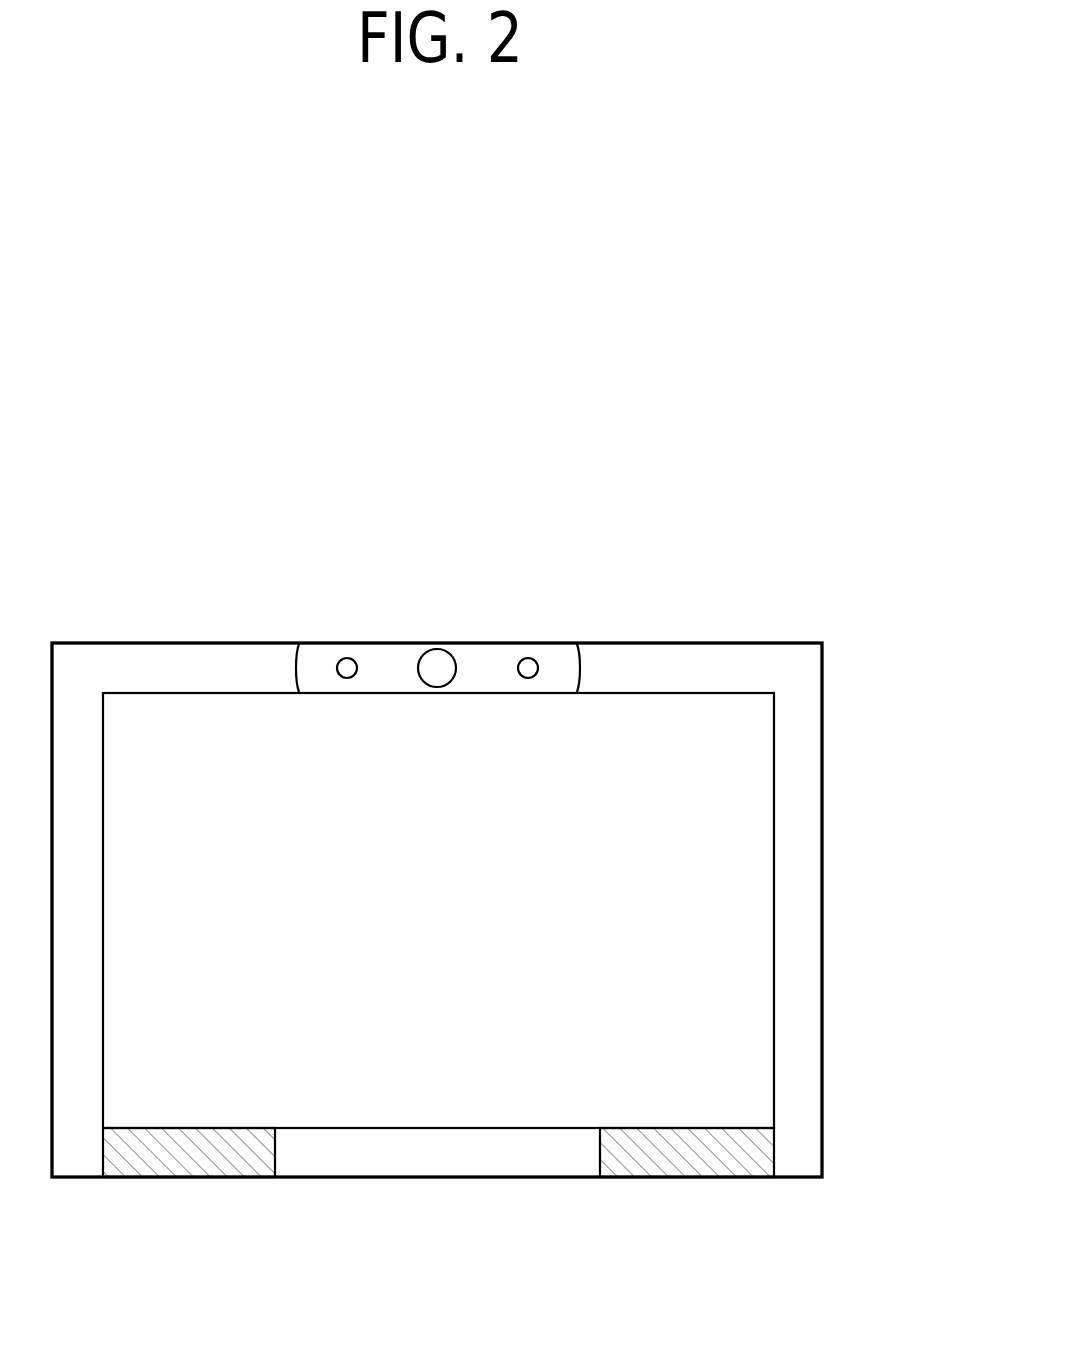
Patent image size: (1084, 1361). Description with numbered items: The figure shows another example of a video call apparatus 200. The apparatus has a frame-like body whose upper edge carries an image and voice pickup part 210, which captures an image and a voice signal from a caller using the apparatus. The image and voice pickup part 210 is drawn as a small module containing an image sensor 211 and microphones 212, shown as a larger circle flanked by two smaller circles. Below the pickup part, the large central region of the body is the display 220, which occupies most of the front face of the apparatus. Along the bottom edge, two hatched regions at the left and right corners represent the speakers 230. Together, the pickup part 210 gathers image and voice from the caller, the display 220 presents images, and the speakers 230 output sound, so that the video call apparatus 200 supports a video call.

The video call apparatus 200 is at (817, 923).
The image and voice pickup part 210 is at (519, 525).
The image sensor 211 is at (345, 658).
The microphones 212 is at (437, 650).
The display 220 is at (439, 1057).
The speakers 230 is at (213, 1170).